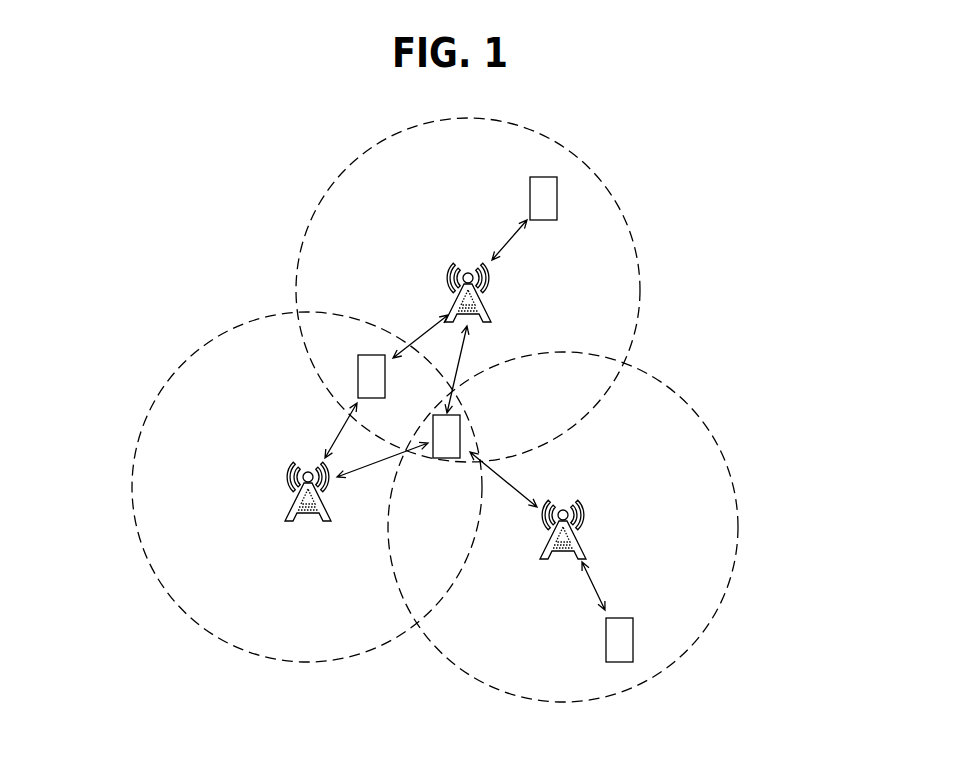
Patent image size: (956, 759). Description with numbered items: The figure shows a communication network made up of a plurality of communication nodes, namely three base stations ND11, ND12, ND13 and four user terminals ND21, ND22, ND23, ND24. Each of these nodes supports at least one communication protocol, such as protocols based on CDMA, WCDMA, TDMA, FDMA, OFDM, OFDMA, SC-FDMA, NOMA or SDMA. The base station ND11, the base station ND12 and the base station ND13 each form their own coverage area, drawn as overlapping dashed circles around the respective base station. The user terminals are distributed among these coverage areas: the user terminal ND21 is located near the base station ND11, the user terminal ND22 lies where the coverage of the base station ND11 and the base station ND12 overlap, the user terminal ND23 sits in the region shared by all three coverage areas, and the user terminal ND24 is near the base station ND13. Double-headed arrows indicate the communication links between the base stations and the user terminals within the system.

The base station ND11 is at (495, 290).
The base station ND12 is at (288, 506).
The base station ND13 is at (582, 498).
The user terminal ND21 is at (548, 221).
The user terminal ND22 is at (372, 354).
The user terminal ND23 is at (462, 418).
The user terminal ND24 is at (632, 620).